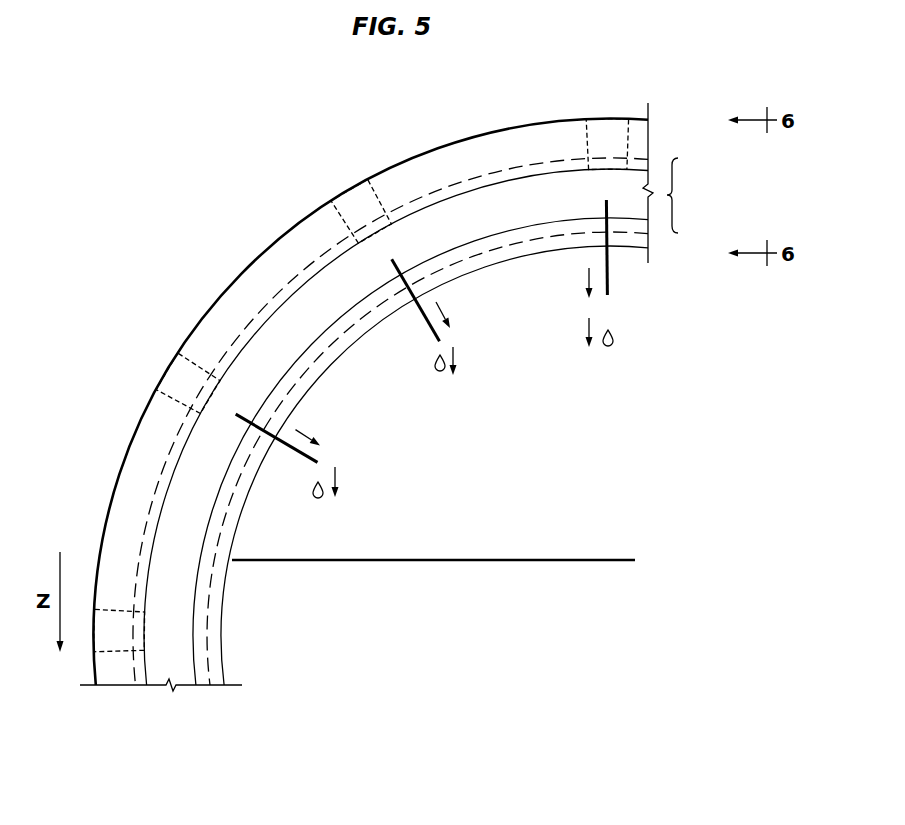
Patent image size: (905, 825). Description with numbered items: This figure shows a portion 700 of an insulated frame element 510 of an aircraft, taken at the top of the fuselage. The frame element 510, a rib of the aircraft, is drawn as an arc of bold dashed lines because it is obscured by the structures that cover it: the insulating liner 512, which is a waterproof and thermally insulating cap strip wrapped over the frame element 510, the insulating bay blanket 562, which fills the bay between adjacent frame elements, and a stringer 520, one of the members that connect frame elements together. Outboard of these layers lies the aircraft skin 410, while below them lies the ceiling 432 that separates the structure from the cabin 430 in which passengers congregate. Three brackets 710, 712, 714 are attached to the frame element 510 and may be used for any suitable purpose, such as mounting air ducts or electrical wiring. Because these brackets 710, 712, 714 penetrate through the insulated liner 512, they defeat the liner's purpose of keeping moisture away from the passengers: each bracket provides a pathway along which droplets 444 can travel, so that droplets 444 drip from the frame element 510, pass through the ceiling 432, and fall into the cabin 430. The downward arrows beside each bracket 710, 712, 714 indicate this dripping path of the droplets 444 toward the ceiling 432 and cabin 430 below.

The portion of frame element 700 is at (383, 403).
The aircraft skin 410 is at (118, 470).
The insulating liner 512 is at (230, 577).
The insulating bay blanket 562 is at (179, 655).
The stringer 520 is at (585, 145).
The frame element 510 is at (694, 195).
The bracket 710 is at (610, 277).
The bracket 712 is at (423, 318).
The bracket 714 is at (295, 457).
The droplets 444 is at (613, 340).
The ceiling 432 is at (493, 558).
The cabin 430 is at (718, 606).